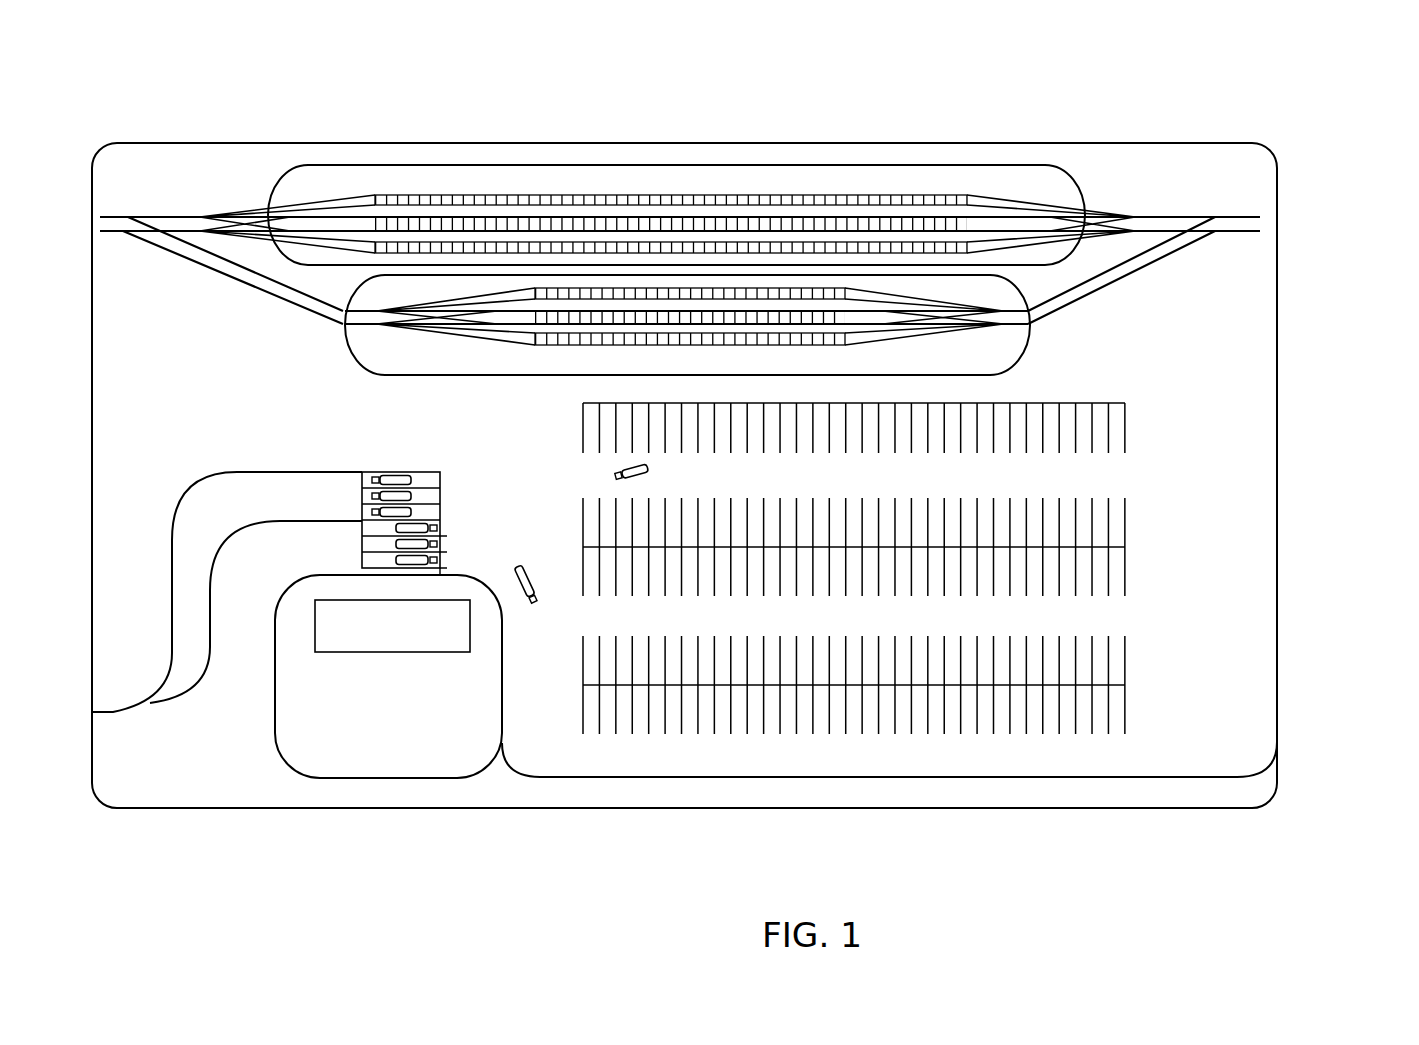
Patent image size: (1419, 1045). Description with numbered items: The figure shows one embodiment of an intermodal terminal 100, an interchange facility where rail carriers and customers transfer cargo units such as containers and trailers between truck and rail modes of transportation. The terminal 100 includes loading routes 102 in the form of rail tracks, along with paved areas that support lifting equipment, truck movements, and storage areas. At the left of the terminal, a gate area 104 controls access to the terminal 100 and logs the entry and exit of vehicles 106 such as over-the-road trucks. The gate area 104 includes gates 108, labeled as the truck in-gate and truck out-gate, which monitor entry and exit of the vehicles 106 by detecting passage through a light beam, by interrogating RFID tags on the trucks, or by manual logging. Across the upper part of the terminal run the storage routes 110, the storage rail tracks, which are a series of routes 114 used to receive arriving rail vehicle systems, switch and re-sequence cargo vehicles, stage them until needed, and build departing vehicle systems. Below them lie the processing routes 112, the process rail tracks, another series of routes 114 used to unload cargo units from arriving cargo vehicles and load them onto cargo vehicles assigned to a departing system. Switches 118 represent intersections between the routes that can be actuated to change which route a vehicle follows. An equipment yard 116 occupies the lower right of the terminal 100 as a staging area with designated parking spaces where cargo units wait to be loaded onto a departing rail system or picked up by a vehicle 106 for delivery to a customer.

The intermodal terminal 100 is at (88, 845).
The loading routes 102 is at (750, 204).
The gate area 104 is at (323, 437).
The vehicles 106 is at (532, 570).
The gates 108 is at (368, 471).
The storage routes 110 is at (267, 113).
The processing routes 112 is at (327, 275).
The routes 114 is at (953, 255).
The equipment yard 116 is at (746, 584).
The switches 118 is at (1027, 333).